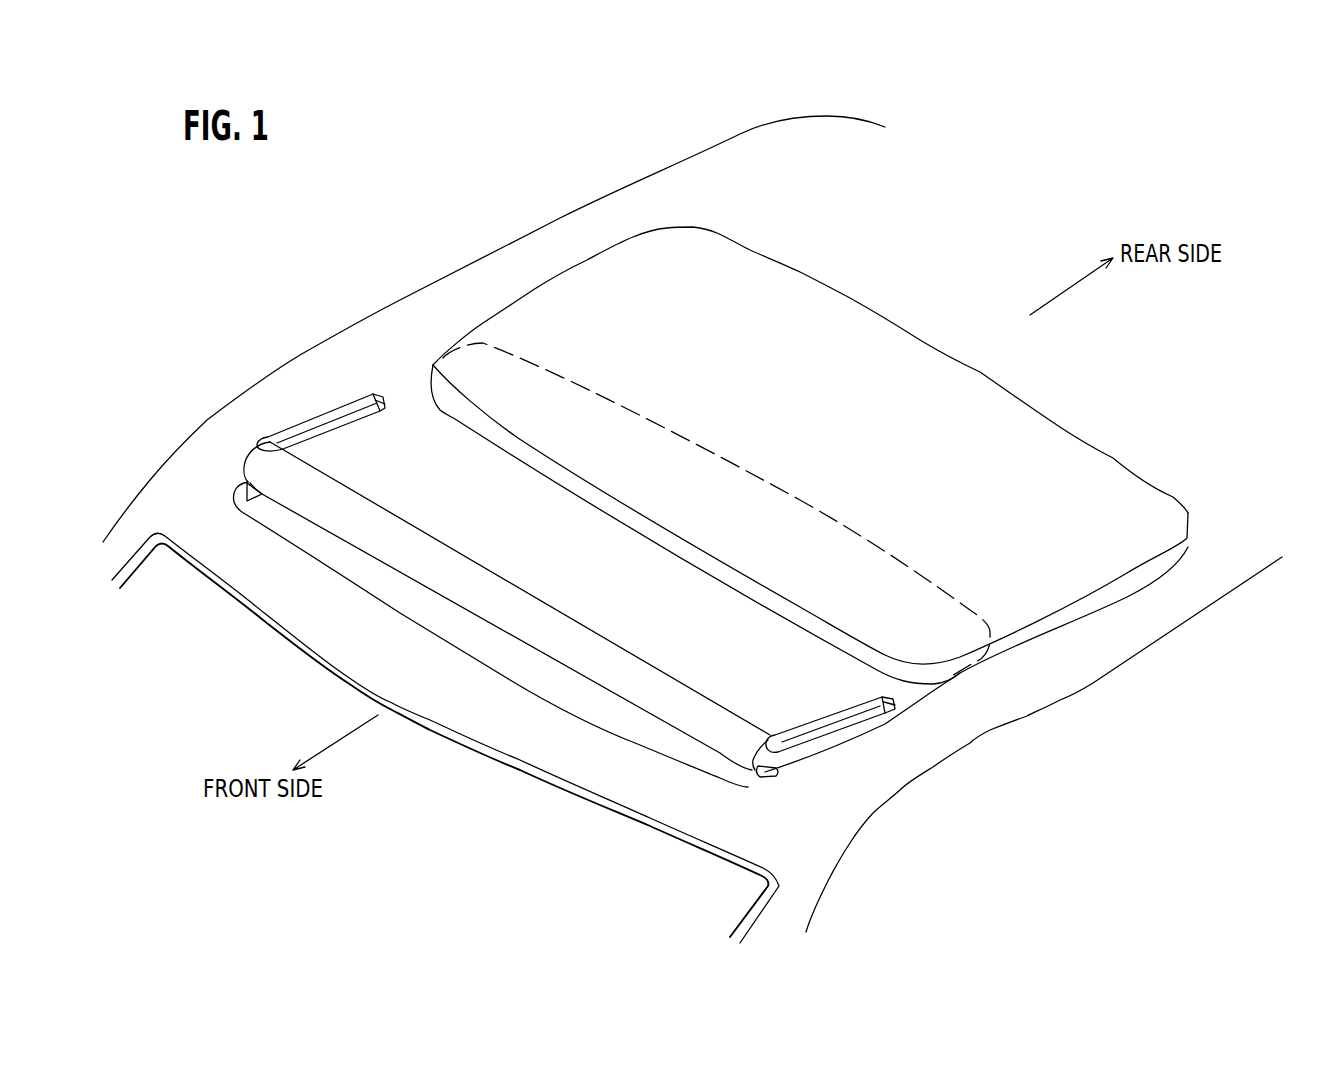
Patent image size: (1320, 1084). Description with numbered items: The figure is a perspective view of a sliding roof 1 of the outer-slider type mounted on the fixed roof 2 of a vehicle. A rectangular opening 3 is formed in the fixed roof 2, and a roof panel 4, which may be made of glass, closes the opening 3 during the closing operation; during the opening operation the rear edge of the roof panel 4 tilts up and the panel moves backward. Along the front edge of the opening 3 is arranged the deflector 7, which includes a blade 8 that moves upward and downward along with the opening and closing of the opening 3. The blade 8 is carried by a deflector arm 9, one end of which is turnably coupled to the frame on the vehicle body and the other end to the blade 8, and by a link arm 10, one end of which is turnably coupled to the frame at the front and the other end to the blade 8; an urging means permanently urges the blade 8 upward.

The sliding roof 1 is at (460, 289).
The fixed roof 2 is at (207, 467).
The opening 3 is at (419, 372).
The roof panel 4 is at (592, 258).
The deflector 7 is at (578, 707).
The blade 8 is at (680, 703).
The deflector arm 9 is at (303, 420).
The link arm 10 is at (765, 776).